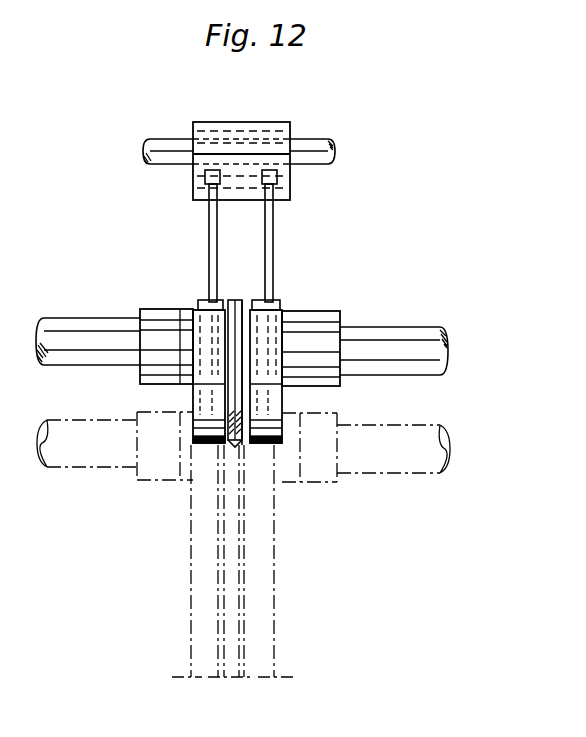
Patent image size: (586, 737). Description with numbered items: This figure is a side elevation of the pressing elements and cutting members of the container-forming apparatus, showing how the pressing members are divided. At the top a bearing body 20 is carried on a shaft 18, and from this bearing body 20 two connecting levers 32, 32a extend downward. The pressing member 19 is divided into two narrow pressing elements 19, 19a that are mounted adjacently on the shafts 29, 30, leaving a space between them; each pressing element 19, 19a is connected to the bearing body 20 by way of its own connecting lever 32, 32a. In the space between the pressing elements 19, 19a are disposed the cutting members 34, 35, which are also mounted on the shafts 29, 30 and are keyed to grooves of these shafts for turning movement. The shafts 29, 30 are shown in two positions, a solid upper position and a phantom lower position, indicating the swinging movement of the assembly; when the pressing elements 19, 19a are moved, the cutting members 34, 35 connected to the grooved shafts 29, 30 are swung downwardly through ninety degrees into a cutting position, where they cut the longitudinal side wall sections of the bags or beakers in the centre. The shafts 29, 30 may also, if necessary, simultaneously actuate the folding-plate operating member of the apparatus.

The shaft 18 is at (315, 150).
The bearing body 20 is at (233, 134).
The connecting lever 32 is at (209, 228).
The connecting lever 32a is at (270, 232).
The pressing member 19 is at (202, 299).
The pressing element 19a is at (278, 300).
The cutting member 34 is at (245, 298).
The cutting member 35 is at (234, 299).
The shaft 29 is at (392, 342).
The shaft 30 is at (390, 460).